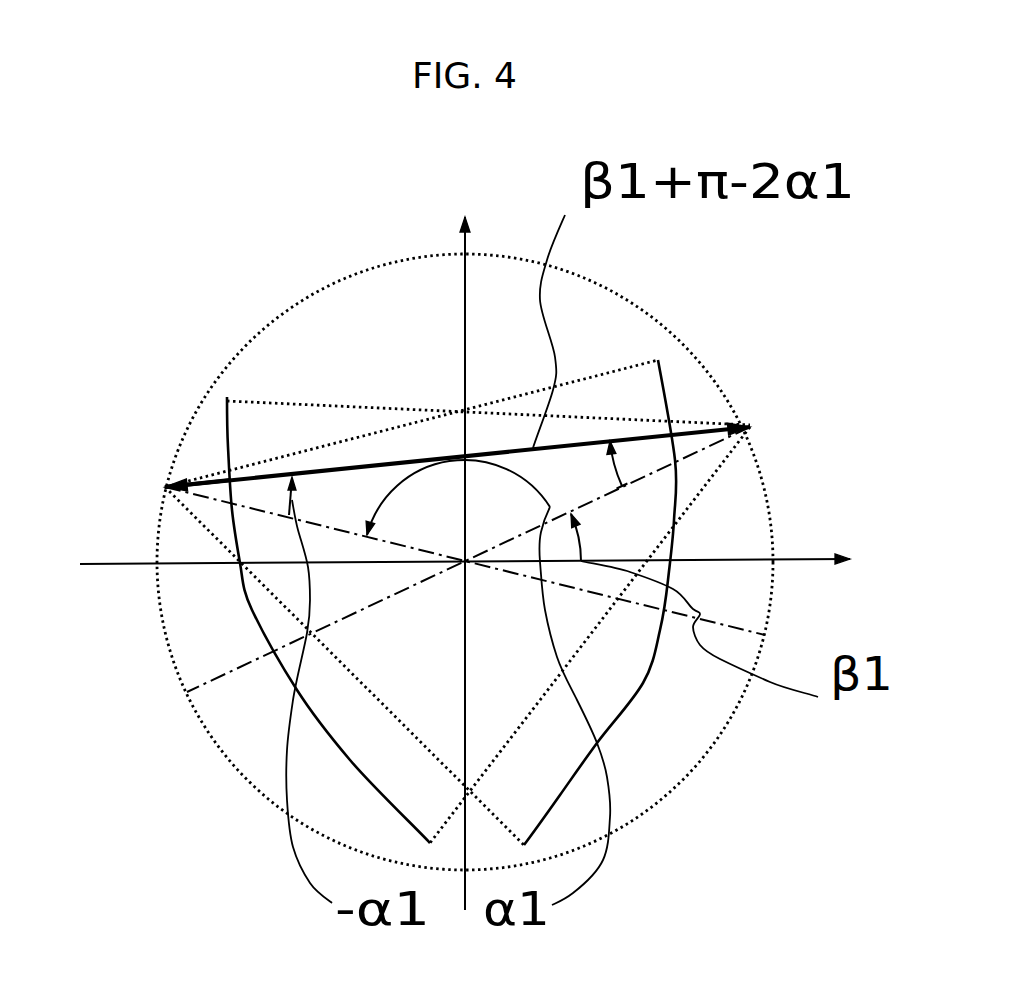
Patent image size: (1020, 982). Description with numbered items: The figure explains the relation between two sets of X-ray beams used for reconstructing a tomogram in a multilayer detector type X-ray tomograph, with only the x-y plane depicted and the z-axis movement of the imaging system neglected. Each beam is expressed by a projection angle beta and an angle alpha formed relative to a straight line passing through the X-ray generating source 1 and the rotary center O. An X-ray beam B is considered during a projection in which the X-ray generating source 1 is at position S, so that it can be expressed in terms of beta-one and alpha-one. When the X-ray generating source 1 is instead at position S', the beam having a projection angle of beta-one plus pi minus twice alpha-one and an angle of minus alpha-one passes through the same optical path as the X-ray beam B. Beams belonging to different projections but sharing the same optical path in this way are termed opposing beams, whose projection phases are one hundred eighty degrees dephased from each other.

The X-ray generating source 1 is at (165, 487).
The X-ray beam B is at (388, 465).
The position of the X-ray generating source S is at (482, 443).
The position of the X-ray generating source S' is at (167, 493).
The origin / center of rotation O is at (479, 553).